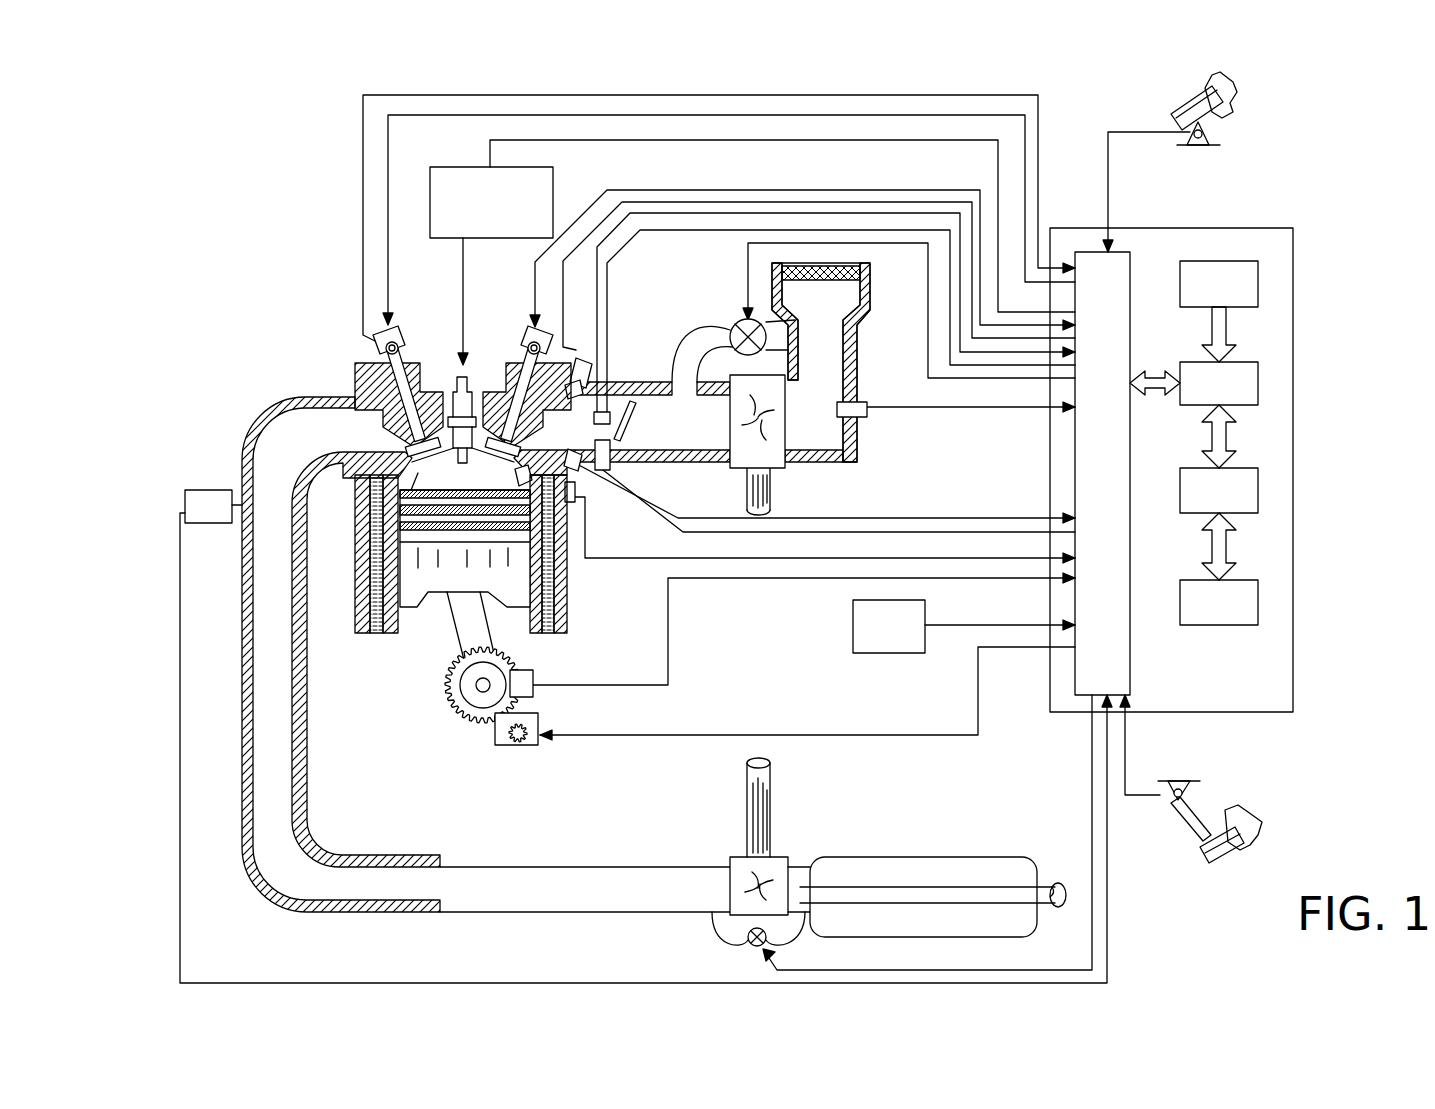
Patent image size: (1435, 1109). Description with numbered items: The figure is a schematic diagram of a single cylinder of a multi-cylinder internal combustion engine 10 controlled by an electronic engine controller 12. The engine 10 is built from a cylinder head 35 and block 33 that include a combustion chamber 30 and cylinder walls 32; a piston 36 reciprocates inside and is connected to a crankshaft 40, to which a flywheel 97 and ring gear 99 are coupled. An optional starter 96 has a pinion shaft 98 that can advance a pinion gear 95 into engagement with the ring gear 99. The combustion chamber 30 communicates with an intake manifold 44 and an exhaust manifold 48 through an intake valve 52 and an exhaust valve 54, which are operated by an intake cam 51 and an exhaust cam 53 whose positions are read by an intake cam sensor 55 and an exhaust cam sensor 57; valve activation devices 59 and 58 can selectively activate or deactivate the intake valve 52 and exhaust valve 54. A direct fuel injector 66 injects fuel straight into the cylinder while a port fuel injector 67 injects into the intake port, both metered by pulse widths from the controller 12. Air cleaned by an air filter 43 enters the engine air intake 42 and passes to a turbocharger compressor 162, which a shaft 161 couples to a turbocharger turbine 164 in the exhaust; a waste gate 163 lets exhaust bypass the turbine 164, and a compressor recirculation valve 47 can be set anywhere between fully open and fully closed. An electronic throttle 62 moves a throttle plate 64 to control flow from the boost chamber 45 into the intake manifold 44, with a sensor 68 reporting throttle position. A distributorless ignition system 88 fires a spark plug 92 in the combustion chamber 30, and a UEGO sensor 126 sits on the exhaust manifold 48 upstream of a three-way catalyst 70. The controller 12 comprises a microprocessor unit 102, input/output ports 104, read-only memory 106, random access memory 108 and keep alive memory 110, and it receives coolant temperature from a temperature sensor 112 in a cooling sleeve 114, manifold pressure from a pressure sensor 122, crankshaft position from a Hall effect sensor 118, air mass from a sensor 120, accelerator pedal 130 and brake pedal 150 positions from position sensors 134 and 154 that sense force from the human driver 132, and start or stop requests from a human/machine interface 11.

The internal combustion engine 10 is at (285, 313).
The human/machine interface 11 is at (889, 626).
The electronic engine controller 12 is at (1282, 226).
The combustion chamber 30 is at (390, 568).
The cylinder walls 32 is at (403, 627).
The block 33 is at (349, 518).
The cylinder head 35 is at (346, 356).
The piston 36 is at (447, 575).
The crankshaft 40 is at (472, 705).
The engine air intake 42 is at (684, 282).
The air filter 43 is at (842, 282).
The intake manifold 44 is at (600, 436).
The boost chamber 45 is at (705, 436).
The compressor recirculation valve 47 is at (742, 322).
The exhaust manifold 48 is at (336, 444).
The intake cam 51 is at (522, 340).
The intake valve 52 is at (513, 432).
The exhaust cam 53 is at (393, 332).
The exhaust valve 54 is at (417, 450).
The intake cam sensor 55 is at (550, 352).
The exhaust cam sensor 57 is at (385, 342).
The valve activation device 58 is at (400, 352).
The valve activation device 59 is at (520, 368).
The electronic throttle 62 is at (631, 428).
The throttle plate 64 is at (622, 438).
The direct fuel injector 66 is at (582, 502).
The port fuel injector 67 is at (582, 375).
The throttle position sensor 68 is at (628, 388).
The three-way catalyst 70 is at (853, 858).
The distributorless ignition system 88 is at (553, 182).
The spark plug 92 is at (465, 376).
The pinion gear 95 is at (520, 743).
The starter 96 is at (530, 748).
The flywheel 97 is at (455, 683).
The pinion shaft 98 is at (508, 745).
The ring gear 99 is at (483, 725).
The microprocessor unit 102 is at (1258, 376).
The input/output ports 104 is at (1132, 262).
The read-only memory 106 is at (1258, 281).
The random access memory 108 is at (1258, 488).
The keep alive memory 110 is at (1258, 598).
The temperature sensor 112 is at (585, 512).
The cooling sleeve 114 is at (553, 580).
The Hall effect sensor 118 is at (537, 670).
The air mass sensor 120 is at (862, 403).
The pressure sensor 122 is at (618, 473).
The UEGO sensor 126 is at (185, 497).
The accelerator pedal 130 is at (1173, 107).
The human driver 132 is at (1227, 93).
The position sensor 134 is at (1198, 132).
The brake pedal 150 is at (1207, 842).
The position sensor 154 is at (1168, 792).
The shaft 161 is at (735, 483).
The turbocharger compressor 162 is at (772, 447).
The waste gate 163 is at (753, 944).
The turbocharger turbine 164 is at (738, 850).